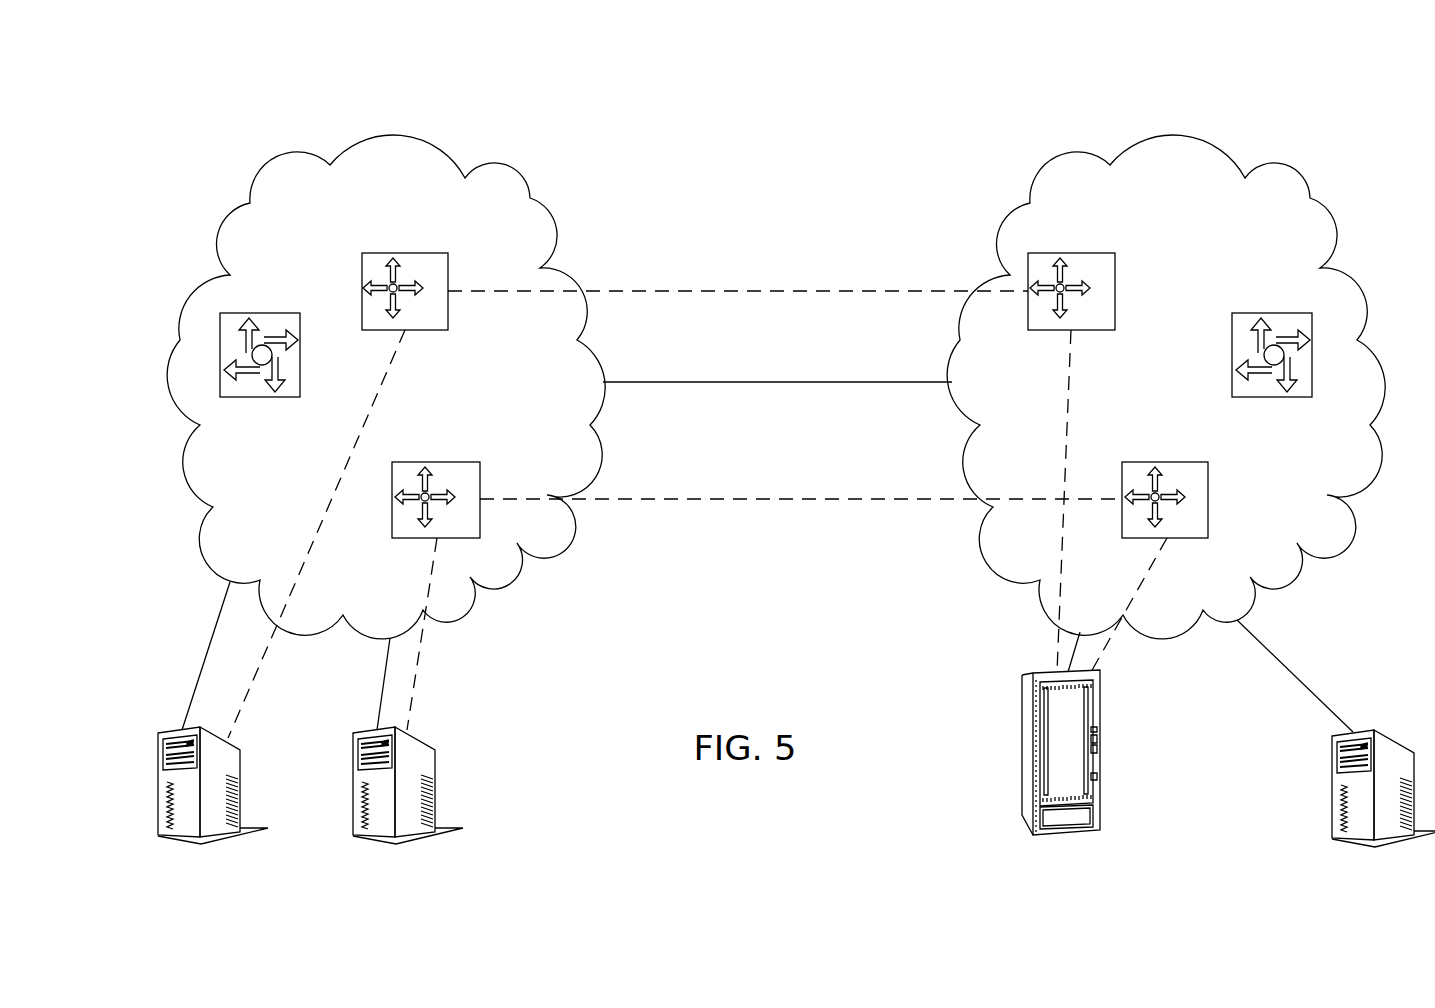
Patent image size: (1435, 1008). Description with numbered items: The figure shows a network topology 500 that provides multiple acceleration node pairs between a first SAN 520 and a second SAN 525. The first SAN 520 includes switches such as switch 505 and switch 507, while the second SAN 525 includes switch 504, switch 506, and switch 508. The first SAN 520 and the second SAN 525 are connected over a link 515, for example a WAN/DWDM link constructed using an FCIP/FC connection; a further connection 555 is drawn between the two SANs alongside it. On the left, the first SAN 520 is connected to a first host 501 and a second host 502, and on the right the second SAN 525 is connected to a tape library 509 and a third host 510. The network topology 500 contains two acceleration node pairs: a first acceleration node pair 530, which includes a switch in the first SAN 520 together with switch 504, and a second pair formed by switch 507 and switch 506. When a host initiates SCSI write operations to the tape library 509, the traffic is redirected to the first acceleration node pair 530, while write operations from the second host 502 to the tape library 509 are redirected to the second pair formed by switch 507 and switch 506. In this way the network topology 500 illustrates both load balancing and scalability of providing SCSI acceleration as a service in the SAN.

The network topology 500 is at (858, 70).
The first SAN 520 is at (404, 135).
The second SAN 525 is at (1174, 133).
The switch 505 is at (238, 313).
The switch 507 is at (410, 253).
The switch 506 is at (1078, 253).
The switch 508 is at (1252, 313).
The switch 504 is at (1172, 462).
The first WAN link 555 is at (704, 290).
The link 515 is at (822, 383).
The first acceleration node pair 530 is at (797, 500).
The first host 501 is at (156, 767).
The second host 502 is at (351, 767).
The tape library 509 is at (1022, 727).
The third host 510 is at (1332, 767).